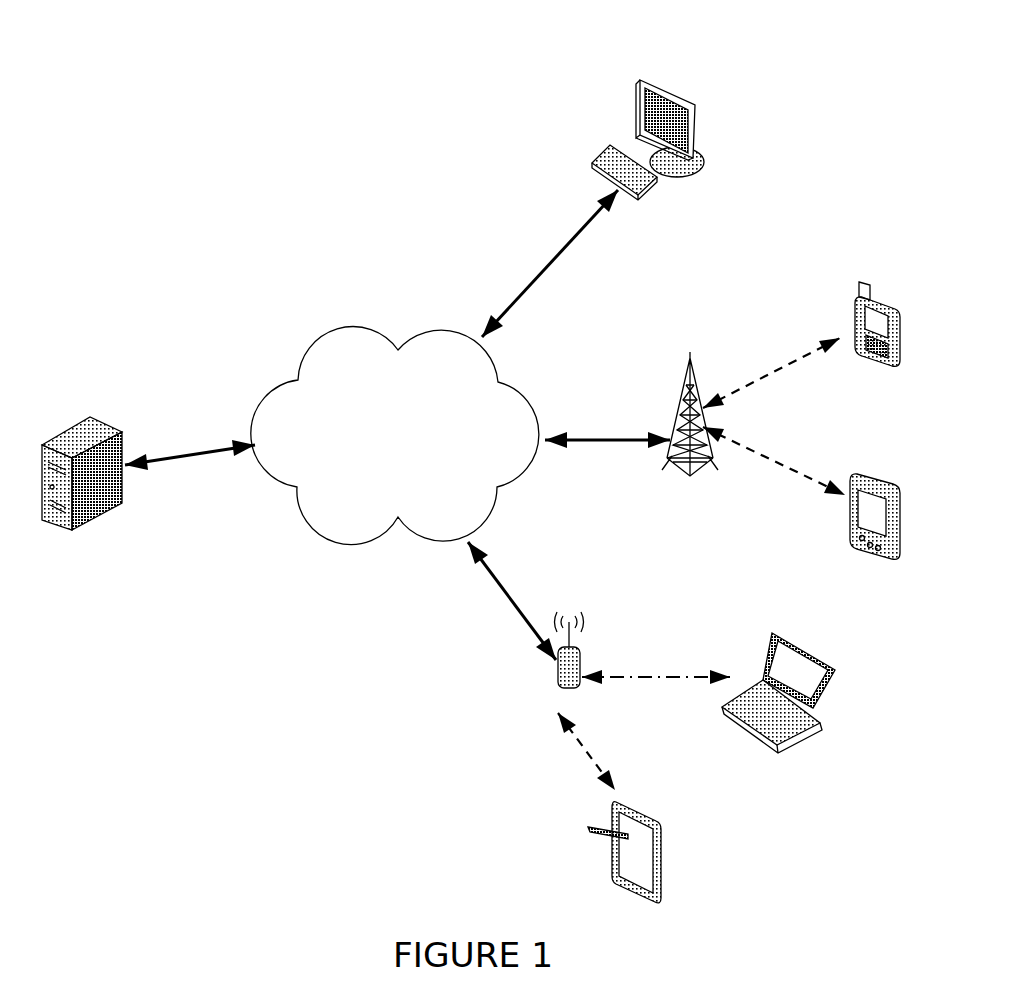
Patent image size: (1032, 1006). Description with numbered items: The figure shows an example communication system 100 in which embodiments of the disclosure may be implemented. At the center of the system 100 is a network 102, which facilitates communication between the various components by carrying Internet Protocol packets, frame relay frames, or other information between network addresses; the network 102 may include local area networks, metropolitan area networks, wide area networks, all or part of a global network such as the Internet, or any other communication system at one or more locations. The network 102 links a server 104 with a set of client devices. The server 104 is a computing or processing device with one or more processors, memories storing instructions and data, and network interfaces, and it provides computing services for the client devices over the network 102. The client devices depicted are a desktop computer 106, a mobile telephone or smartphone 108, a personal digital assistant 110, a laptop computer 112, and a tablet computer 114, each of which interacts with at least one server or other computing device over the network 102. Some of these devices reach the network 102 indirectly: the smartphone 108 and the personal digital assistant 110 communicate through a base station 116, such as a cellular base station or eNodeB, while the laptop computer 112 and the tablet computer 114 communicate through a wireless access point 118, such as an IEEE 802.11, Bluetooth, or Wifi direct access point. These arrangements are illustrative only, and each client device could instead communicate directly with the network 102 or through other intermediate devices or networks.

The communication system 100 is at (212, 172).
The network 102 is at (304, 325).
The server 104 is at (60, 432).
The desktop computer 106 is at (640, 82).
The mobile telephone or smartphone 108 is at (895, 304).
The personal digital assistant (PDA) 110 is at (893, 490).
The laptop computer 112 is at (835, 678).
The tablet computer 114 is at (665, 843).
The base station 116 is at (713, 457).
The wireless access point 118 is at (582, 660).